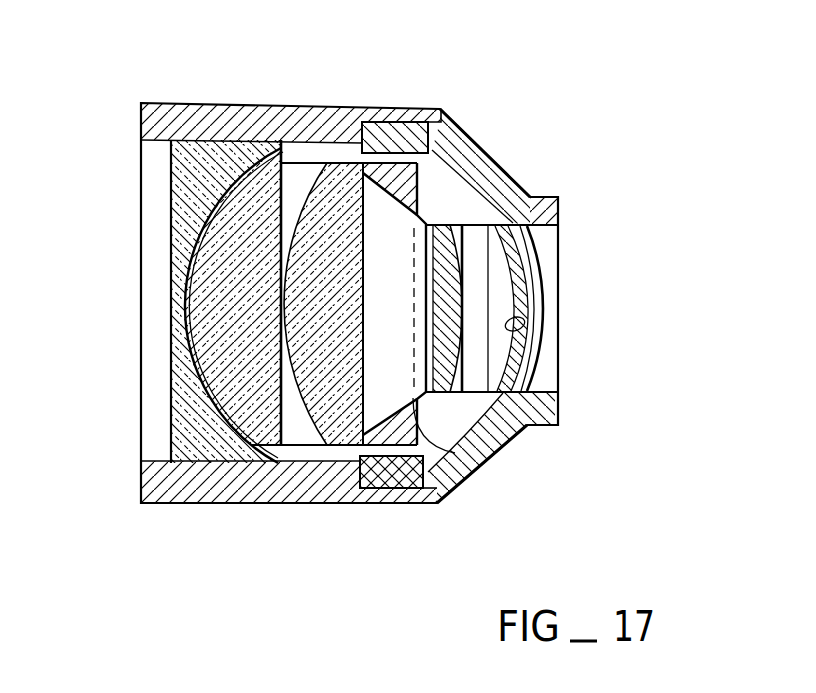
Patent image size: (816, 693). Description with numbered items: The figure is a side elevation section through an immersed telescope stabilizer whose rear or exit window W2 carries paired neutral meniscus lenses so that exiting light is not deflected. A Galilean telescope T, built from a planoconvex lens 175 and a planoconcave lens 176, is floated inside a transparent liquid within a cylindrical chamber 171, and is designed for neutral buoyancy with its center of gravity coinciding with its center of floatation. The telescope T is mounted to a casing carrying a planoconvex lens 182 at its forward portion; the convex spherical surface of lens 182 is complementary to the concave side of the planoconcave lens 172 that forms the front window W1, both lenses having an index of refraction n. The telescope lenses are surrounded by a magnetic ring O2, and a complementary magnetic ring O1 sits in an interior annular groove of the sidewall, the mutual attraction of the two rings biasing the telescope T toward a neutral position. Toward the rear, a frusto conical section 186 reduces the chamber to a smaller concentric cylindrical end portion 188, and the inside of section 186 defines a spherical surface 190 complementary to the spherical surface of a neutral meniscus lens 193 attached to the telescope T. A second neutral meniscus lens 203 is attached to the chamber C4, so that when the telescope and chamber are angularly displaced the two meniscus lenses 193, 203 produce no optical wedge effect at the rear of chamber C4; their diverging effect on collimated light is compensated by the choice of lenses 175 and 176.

The cylindrical chamber 171 is at (190, 487).
The planoconcave lens 172 is at (176, 421).
The planoconvex lens 175 is at (347, 255).
The planoconcave lens 176 is at (440, 253).
The planoconvex lens 182 is at (258, 251).
The frusto conical section 186 is at (512, 179).
The cylindrical end portion 188 is at (540, 190).
The spherical surface 190 is at (527, 427).
The neutral meniscus lens 193 is at (512, 330).
The neutral meniscus lens 203 is at (537, 267).
The window W1 is at (163, 195).
The window W2 is at (538, 366).
The magnetic ring O1 is at (388, 127).
The magnetic ring O2 is at (430, 157).
The chamber C4 is at (478, 172).
The telescope T is at (480, 467).
The index of refraction n is at (250, 398).